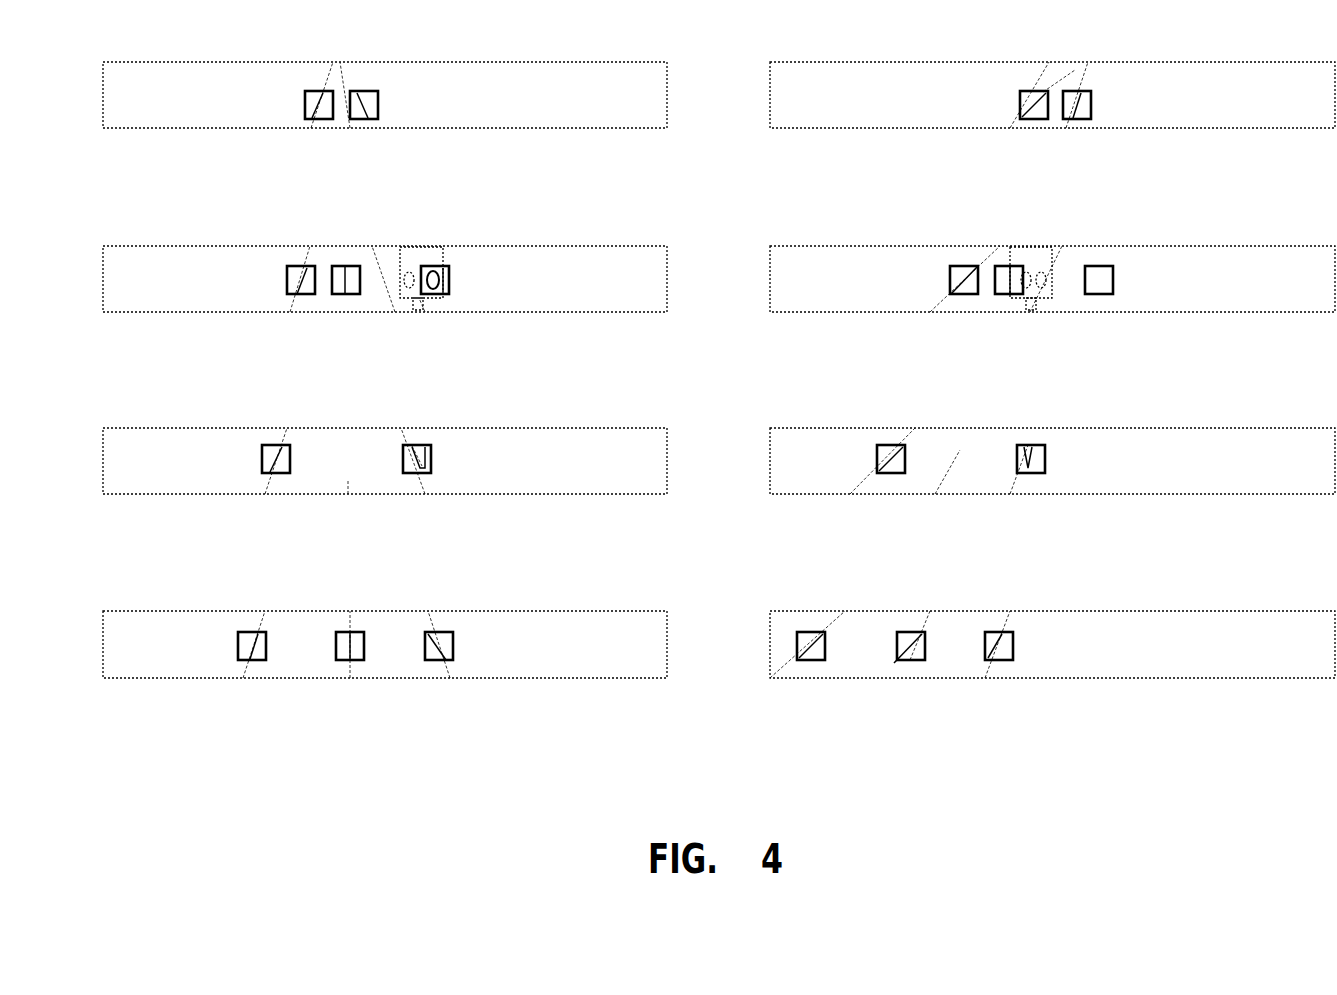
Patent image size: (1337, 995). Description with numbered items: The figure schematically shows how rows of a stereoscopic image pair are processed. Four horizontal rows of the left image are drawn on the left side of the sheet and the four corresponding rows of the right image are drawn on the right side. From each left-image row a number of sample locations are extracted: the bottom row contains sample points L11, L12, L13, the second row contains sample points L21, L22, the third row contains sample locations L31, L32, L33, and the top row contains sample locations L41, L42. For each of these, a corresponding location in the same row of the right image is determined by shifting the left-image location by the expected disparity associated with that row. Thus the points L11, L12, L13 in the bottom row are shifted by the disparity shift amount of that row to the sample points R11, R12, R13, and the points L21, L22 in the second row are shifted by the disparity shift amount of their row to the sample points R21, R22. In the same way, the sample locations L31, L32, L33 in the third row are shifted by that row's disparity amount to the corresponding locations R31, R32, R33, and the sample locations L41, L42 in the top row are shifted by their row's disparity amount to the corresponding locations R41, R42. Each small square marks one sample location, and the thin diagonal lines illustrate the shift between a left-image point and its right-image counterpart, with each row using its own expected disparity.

The sample location L41 is at (321, 91).
The sample location L42 is at (362, 91).
The corresponding sample location R41 is at (1035, 91).
The corresponding sample location R42 is at (1080, 91).
The sample location L31 is at (303, 266).
The sample location L32 is at (345, 266).
The sample location L33 is at (433, 266).
The corresponding sample location R31 is at (964, 266).
The corresponding sample location R32 is at (1010, 266).
The corresponding sample location R33 is at (1093, 266).
The sample point L21 is at (272, 445).
The sample point L22 is at (418, 445).
The sample point R21 is at (891, 445).
The sample point R22 is at (1028, 445).
The sample point L11 is at (255, 632).
The sample point L12 is at (350, 632).
The sample point L13 is at (438, 632).
The sample point R11 is at (815, 632).
The sample point R12 is at (907, 632).
The sample point R13 is at (998, 632).